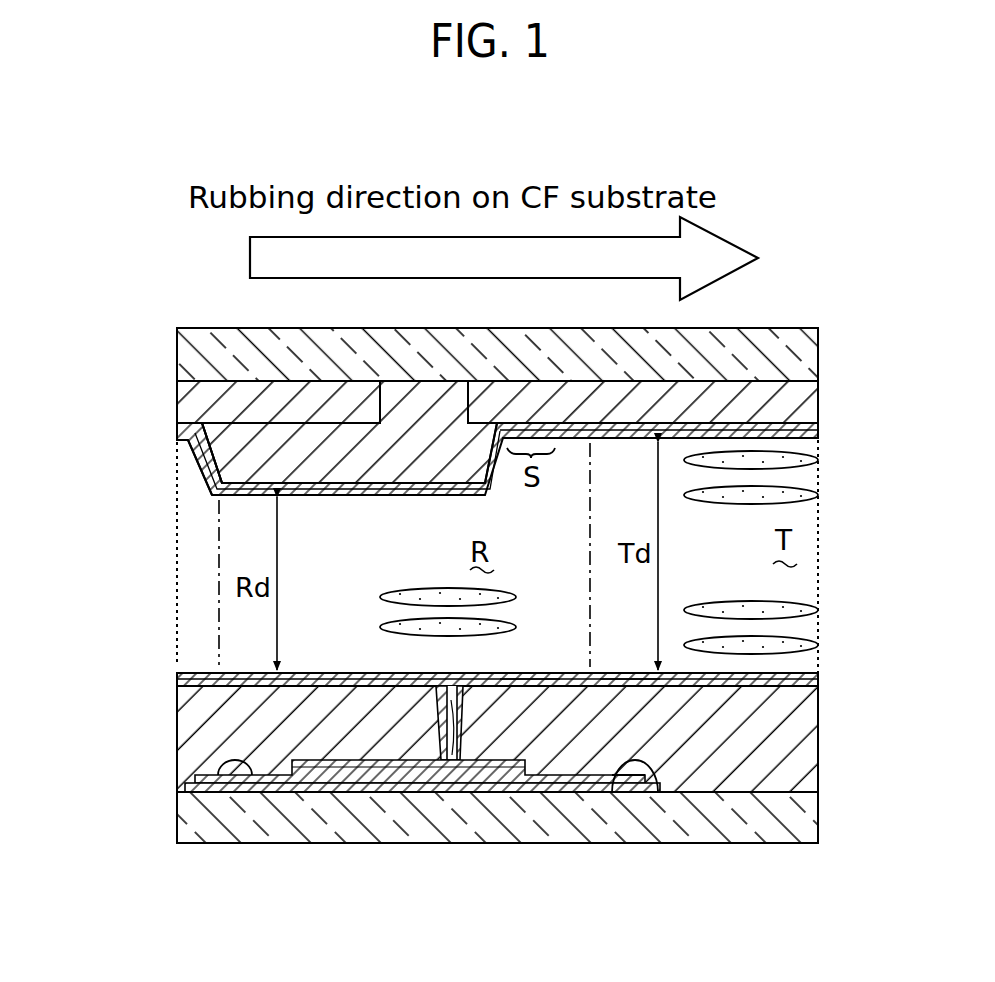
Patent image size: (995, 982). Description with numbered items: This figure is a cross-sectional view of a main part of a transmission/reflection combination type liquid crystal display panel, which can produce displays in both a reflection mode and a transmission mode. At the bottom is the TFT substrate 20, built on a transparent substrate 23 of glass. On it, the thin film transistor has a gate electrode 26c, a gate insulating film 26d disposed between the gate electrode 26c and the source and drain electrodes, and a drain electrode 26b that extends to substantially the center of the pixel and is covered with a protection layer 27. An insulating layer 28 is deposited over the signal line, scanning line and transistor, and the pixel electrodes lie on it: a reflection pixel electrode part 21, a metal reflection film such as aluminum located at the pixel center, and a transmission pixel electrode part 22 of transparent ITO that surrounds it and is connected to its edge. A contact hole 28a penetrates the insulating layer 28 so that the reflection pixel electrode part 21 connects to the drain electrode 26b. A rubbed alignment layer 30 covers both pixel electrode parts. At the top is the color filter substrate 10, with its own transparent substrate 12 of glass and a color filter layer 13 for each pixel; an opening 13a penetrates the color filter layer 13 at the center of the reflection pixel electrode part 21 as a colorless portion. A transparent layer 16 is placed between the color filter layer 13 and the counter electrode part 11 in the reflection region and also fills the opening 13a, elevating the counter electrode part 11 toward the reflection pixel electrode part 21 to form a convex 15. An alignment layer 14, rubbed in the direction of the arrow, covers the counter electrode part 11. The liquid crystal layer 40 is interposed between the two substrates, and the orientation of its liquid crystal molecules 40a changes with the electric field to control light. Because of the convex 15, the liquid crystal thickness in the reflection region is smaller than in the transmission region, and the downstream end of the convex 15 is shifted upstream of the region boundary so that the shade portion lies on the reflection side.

The color filter substrate 10 is at (483, 440).
The counter electrode part 11 is at (818, 432).
The transparent substrate 12 is at (818, 353).
The color filter layer 13 is at (818, 403).
The opening 13a is at (380, 402).
The alignment layer 14 is at (818, 443).
The convex 15 is at (192, 458).
The transparent layer 16 is at (210, 478).
The TFT substrate 20 is at (483, 780).
The reflection pixel electrode part 21 is at (543, 672).
The transmission pixel electrode part 22 is at (630, 672).
The transparent substrate 23 is at (818, 818).
The drain electrode 26b is at (250, 781).
The gate electrode 26c is at (617, 786).
The gate insulating film 26d is at (657, 772).
The protection layer 27 is at (203, 778).
The insulating layer 28 is at (818, 740).
The contact hole 28a is at (447, 762).
The alignment layer 30 is at (818, 673).
The liquid crystal layer 40 is at (535, 557).
The liquid crystal molecules 40a is at (413, 588).